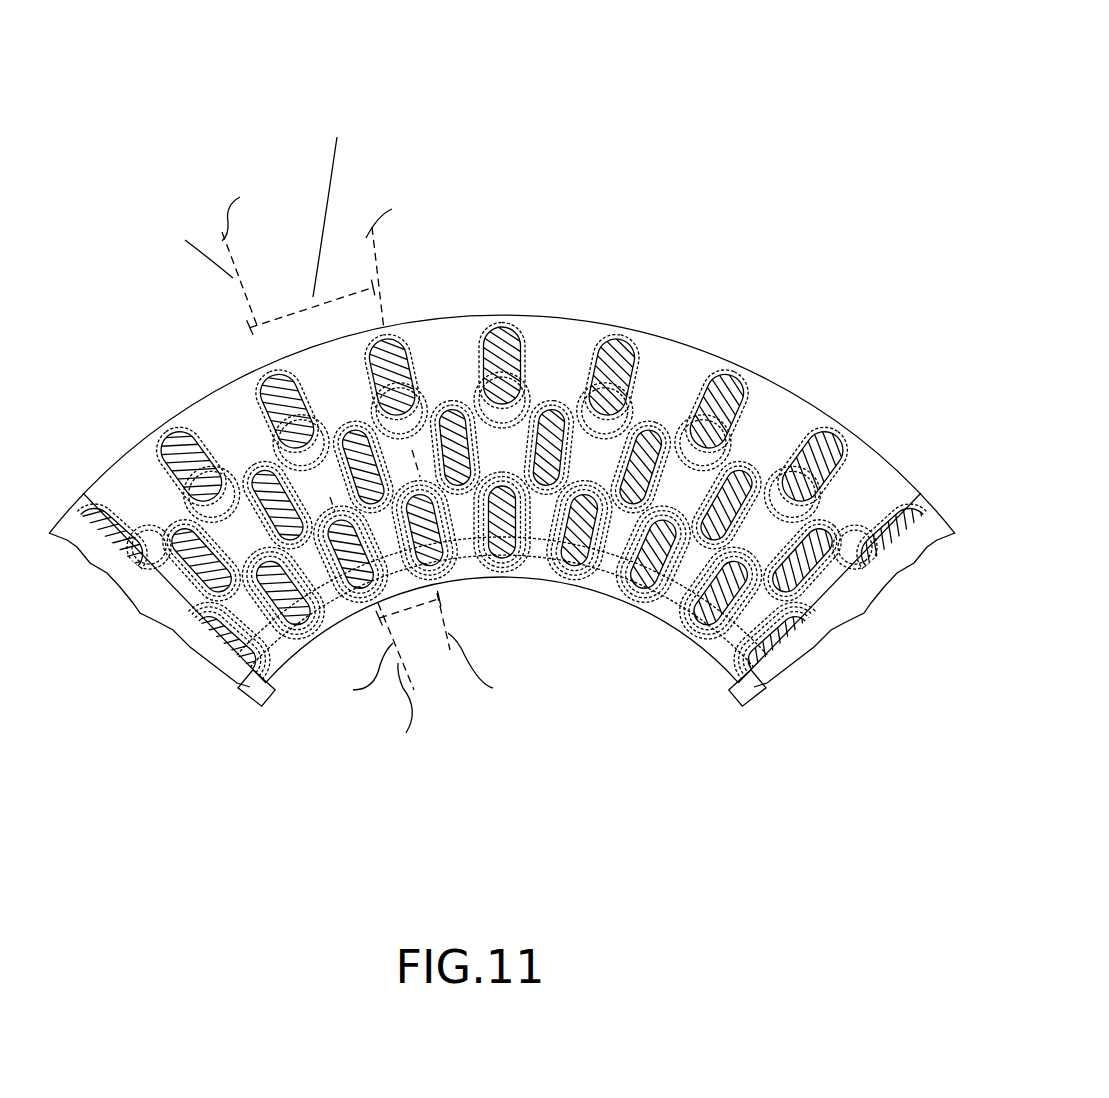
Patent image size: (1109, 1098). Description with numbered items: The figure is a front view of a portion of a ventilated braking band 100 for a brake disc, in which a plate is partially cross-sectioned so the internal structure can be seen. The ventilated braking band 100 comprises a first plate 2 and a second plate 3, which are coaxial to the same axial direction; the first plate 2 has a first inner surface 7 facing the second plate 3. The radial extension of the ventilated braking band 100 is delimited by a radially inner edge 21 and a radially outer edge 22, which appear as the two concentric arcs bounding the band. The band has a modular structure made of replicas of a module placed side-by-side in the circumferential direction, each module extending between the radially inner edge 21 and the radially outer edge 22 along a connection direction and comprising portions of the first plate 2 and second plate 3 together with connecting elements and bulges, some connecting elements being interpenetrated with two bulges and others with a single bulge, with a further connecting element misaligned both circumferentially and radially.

The ventilated braking band 100 is at (722, 120).
The first plate 2 is at (863, 432).
The radially outer edge 22 is at (540, 315).
The radially inner edge 21 is at (706, 655).
The second plate 3 is at (167, 593).
The first inner surface 7 is at (760, 408).